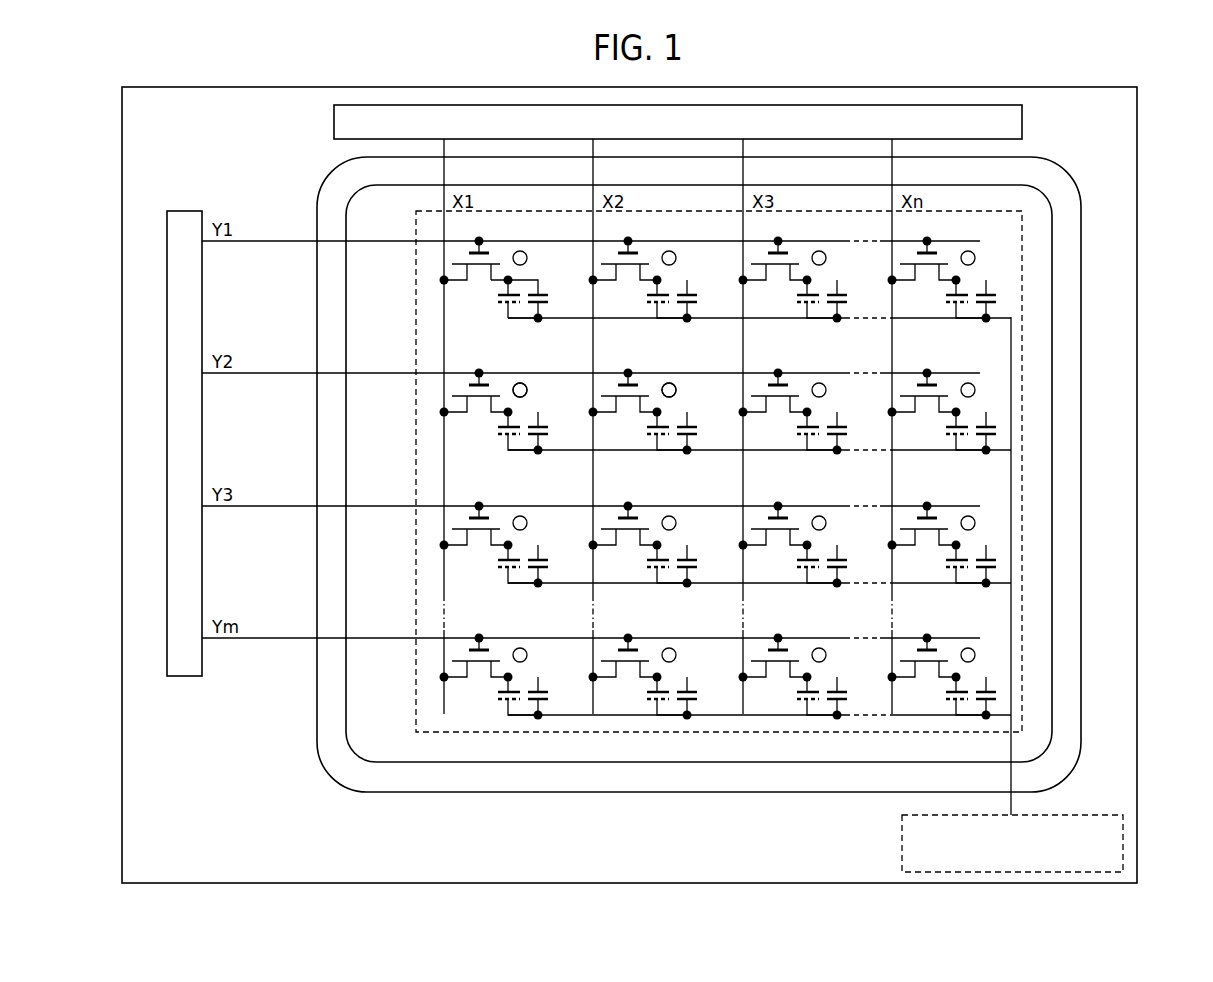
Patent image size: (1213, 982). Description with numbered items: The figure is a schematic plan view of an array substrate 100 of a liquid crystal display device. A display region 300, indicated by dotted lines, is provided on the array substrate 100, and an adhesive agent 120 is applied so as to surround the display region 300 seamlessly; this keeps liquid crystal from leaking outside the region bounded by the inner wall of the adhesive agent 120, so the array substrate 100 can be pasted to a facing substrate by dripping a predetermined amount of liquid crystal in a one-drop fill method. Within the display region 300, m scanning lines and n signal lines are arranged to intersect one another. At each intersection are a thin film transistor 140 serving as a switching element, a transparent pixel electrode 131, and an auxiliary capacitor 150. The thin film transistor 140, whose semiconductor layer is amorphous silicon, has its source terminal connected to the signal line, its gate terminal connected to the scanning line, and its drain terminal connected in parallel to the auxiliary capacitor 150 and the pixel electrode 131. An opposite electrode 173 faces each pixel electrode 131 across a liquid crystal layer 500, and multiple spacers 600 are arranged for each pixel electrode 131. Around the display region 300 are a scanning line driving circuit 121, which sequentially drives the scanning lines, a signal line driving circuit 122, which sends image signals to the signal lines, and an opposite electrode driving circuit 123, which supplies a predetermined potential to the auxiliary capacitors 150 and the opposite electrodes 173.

The array substrate 100 is at (932, 50).
The adhesive agent 120 is at (1073, 180).
The scanning line driving circuit 121 is at (183, 677).
The signal line driving circuit 122 is at (334, 122).
The opposite electrode driving circuit 123 is at (902, 836).
The pixel electrode 131 is at (500, 290).
The thin film transistor 140 is at (467, 258).
The auxiliary capacitor 150 is at (568, 271).
The opposite electrode 173 is at (500, 303).
The display region 300 is at (998, 280).
The liquid crystal layer 500 is at (495, 302).
The spacers 600 is at (528, 388).